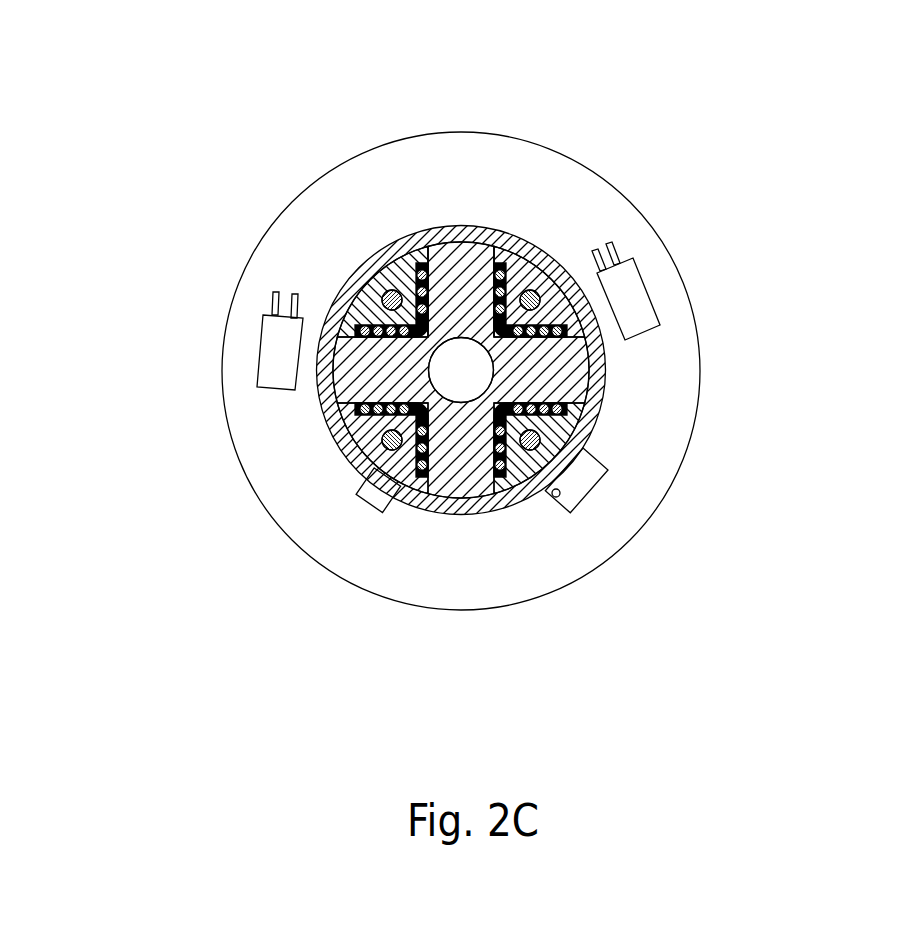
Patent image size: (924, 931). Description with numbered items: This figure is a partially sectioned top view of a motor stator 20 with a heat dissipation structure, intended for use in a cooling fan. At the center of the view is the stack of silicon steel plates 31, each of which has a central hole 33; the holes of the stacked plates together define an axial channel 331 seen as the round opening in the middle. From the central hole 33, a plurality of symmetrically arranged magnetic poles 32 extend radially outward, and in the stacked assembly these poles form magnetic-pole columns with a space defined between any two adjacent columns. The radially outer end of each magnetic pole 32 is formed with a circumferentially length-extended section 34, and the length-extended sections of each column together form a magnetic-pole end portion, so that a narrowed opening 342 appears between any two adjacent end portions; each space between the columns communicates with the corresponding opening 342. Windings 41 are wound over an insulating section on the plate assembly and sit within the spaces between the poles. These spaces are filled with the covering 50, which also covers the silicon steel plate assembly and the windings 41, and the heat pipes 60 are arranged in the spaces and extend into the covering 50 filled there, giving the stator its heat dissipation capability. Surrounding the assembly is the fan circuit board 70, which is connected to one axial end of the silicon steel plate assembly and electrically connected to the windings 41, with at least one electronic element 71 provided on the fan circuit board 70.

The motor stator 20 is at (742, 167).
The silicon steel plate 31 is at (585, 266).
The magnetic pole 32 is at (518, 270).
The central hole 33 is at (445, 263).
The length-extended section 34 is at (457, 257).
The axial channel 331 is at (473, 377).
The opening 342 is at (355, 465).
The winding 41 is at (358, 282).
The covering 50 is at (373, 422).
The heat pipe 60 is at (388, 296).
The fan circuit board 70 is at (262, 262).
The electronic element 71 is at (268, 363).